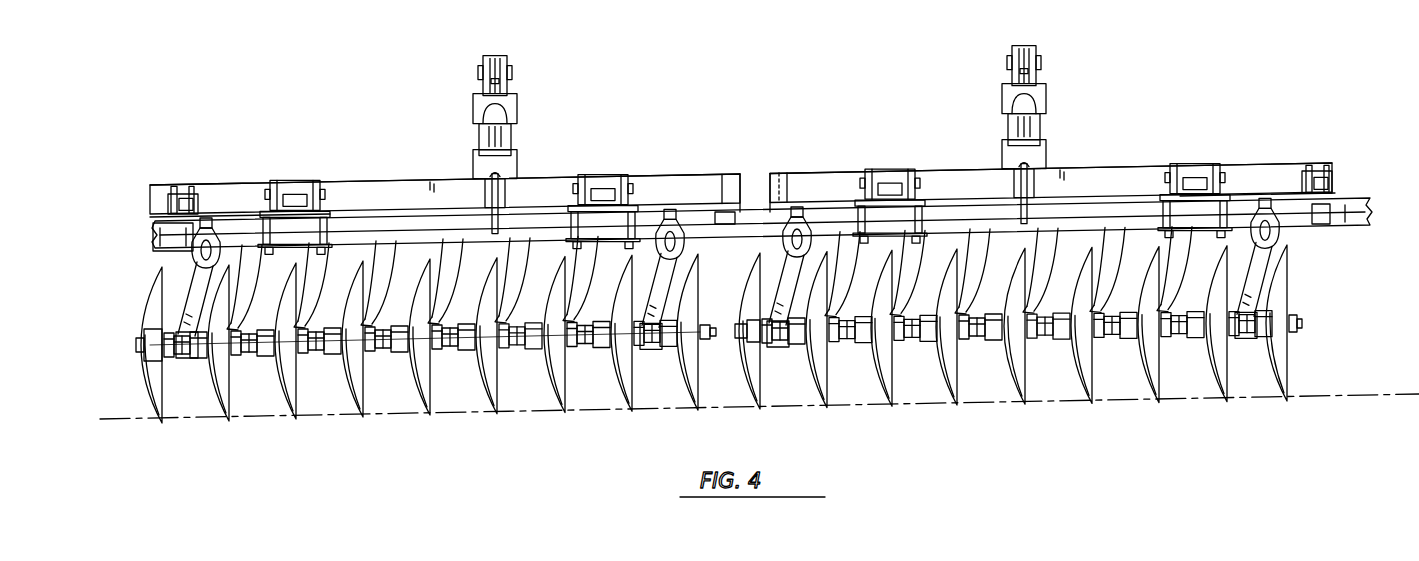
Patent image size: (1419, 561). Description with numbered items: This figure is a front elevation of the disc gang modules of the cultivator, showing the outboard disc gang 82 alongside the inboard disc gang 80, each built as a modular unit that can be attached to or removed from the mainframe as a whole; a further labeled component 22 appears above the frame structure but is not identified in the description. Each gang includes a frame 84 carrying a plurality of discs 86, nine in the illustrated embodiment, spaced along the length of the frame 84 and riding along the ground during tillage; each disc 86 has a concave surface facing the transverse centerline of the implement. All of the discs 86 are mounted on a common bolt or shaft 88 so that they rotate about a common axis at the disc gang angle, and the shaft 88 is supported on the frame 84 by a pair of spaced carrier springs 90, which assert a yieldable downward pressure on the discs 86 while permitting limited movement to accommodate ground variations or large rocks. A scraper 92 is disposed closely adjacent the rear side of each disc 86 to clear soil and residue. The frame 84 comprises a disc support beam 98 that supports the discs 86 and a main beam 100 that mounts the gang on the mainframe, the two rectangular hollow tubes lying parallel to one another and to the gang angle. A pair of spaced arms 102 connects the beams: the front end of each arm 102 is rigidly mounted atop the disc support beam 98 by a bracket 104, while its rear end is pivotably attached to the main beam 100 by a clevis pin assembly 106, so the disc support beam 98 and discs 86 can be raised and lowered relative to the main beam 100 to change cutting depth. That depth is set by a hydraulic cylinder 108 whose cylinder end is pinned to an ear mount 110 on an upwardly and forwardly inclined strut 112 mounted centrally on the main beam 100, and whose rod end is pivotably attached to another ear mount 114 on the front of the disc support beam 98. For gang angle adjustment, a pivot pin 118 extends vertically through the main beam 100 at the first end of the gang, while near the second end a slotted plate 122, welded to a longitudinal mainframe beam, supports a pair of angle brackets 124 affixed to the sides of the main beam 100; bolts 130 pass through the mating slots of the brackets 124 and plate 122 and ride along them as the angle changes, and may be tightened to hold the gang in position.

The disc harrow frame 22 is at (877, 128).
The inboard disc gang 80 is at (1229, 74).
The outboard disc gang 82 is at (416, 113).
The frame 84 is at (447, 176).
The discs 86 is at (226, 418).
The shaft 88 is at (138, 342).
The carrier springs 90 is at (212, 225).
The scraper 92 is at (514, 254).
The disc support beam 98 is at (182, 246).
The main beam 100 is at (370, 181).
The arms 102 is at (292, 198).
The bracket 104 is at (323, 192).
The clevis pin assembly 106 is at (283, 187).
The hydraulic cylinder 108 is at (512, 125).
The ear mount 110 is at (496, 56).
The strut 112 is at (500, 58).
The ear mount 114 is at (528, 200).
The pivot pin 118 is at (755, 175).
The slotted plate 122 is at (170, 219).
The angle brackets 124 is at (172, 206).
The bolts 130 is at (182, 193).